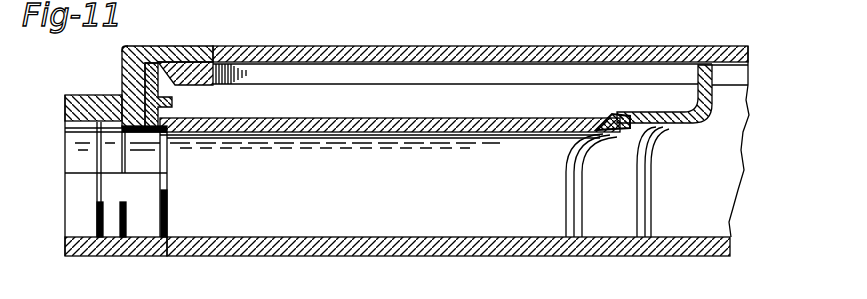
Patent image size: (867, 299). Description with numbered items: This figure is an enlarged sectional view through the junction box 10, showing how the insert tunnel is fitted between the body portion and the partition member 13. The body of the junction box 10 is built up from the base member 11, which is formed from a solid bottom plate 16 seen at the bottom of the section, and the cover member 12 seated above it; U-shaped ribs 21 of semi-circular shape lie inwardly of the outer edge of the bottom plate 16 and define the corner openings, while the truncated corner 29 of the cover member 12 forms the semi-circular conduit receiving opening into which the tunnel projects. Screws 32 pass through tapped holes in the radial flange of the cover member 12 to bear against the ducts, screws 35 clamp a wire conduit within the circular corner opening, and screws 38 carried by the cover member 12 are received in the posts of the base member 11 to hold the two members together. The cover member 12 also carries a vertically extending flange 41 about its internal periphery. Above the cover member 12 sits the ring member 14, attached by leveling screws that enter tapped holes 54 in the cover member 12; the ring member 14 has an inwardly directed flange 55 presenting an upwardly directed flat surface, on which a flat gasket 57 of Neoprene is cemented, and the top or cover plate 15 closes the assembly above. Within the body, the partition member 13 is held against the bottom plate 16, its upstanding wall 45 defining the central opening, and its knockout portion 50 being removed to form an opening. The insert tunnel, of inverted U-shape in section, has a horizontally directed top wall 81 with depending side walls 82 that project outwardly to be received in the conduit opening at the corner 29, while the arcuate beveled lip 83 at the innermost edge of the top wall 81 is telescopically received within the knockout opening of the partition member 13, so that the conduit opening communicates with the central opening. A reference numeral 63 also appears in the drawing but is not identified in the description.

The junction box 10 is at (690, 45).
The base member 11 is at (101, 254).
The cover member 12 is at (82, 95).
The partition member 13 is at (712, 107).
The ring member 14 is at (176, 46).
The top or cover plate 15 is at (356, 29).
The bottom plate 16 is at (606, 250).
The U-shaped ribs 21 is at (150, 225).
The truncated corner 29 is at (65, 152).
The screws 32 is at (448, 2).
The screws 35 is at (216, 5).
The screws 38 is at (585, 0).
The vertically extending flange 41 is at (172, 101).
The upstanding wall 45 is at (745, 70).
The knockout portion 50 is at (608, 118).
The tapped holes 54 is at (261, 1).
The inwardly directed flange 55 is at (212, 84).
The flat gasket 57 is at (188, 60).
The rounded corner 63 is at (123, 61).
The top wall 81 is at (423, 130).
The side walls 82 is at (497, 150).
The beveled lip 83 is at (600, 133).